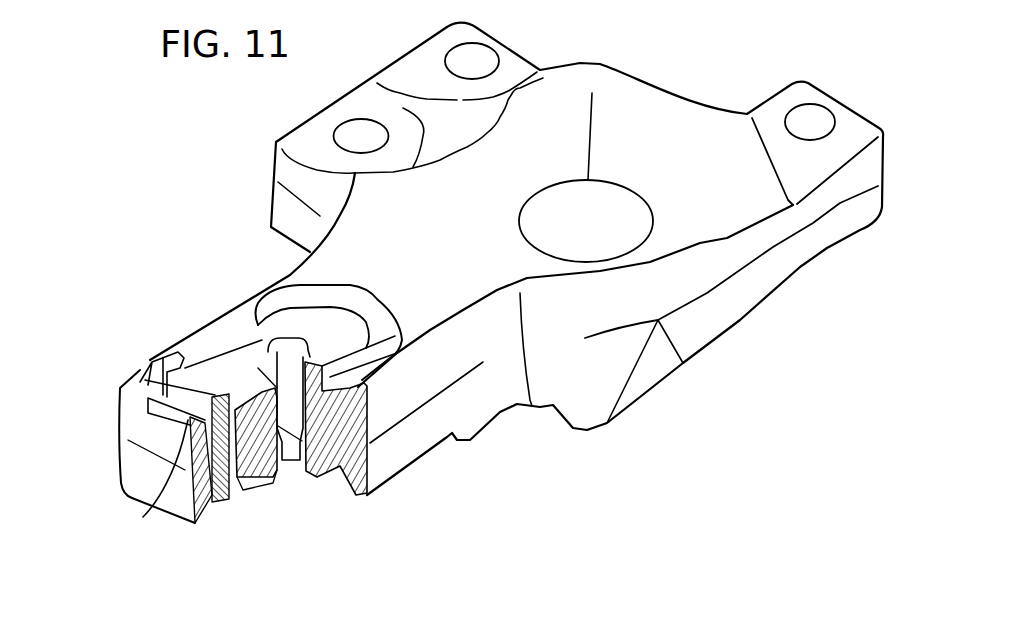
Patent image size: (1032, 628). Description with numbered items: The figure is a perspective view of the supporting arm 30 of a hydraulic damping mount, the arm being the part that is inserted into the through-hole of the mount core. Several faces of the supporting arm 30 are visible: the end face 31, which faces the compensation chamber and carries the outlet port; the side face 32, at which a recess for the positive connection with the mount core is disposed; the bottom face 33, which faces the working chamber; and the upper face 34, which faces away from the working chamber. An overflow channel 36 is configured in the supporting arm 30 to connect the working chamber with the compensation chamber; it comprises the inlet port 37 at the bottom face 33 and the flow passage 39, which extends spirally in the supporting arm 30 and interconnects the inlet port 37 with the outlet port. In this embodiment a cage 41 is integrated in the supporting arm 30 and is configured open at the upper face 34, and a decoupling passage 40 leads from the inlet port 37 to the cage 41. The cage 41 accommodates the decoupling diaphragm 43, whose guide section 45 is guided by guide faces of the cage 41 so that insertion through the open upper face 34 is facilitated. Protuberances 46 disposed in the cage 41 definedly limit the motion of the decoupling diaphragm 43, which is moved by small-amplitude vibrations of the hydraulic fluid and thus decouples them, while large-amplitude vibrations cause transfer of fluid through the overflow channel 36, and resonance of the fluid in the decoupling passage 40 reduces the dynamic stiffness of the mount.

The supporting arm 30 is at (690, 88).
The end face 31 is at (124, 456).
The side face 32 is at (484, 390).
The bottom face 33 is at (213, 525).
The upper face 34 is at (251, 295).
The overflow channel 36 is at (380, 300).
The inlet port 37 is at (289, 468).
The flow passage 39 is at (336, 473).
The decoupling passage 40 is at (271, 354).
The cage 41 is at (237, 488).
The decoupling diaphragm 43 is at (132, 376).
The guide section 45 is at (165, 349).
The protuberances 46 is at (158, 497).